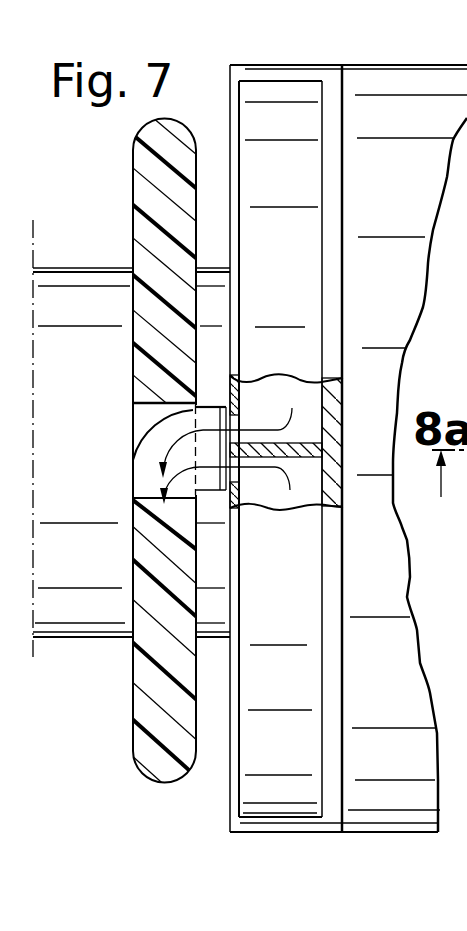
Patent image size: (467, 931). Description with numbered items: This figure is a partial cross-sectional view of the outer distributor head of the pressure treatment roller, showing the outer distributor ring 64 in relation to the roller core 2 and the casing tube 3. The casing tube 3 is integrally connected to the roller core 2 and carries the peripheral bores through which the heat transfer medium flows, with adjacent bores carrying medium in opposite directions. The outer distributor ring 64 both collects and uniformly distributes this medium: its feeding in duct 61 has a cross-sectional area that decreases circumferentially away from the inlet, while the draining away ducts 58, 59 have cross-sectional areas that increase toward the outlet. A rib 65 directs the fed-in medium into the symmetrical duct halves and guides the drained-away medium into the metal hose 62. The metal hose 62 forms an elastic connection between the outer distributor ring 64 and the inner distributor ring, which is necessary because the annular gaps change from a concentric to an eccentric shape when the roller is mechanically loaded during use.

The roller core 2 is at (74, 283).
The casing tube 3 is at (398, 95).
The draining away duct 58 is at (143, 483).
The draining away duct 59 is at (133, 423).
The feeding in duct 61 is at (466, 378).
The metal hose 62 is at (138, 695).
The outer distributor ring 64 is at (280, 96).
The rib 65 is at (298, 455).